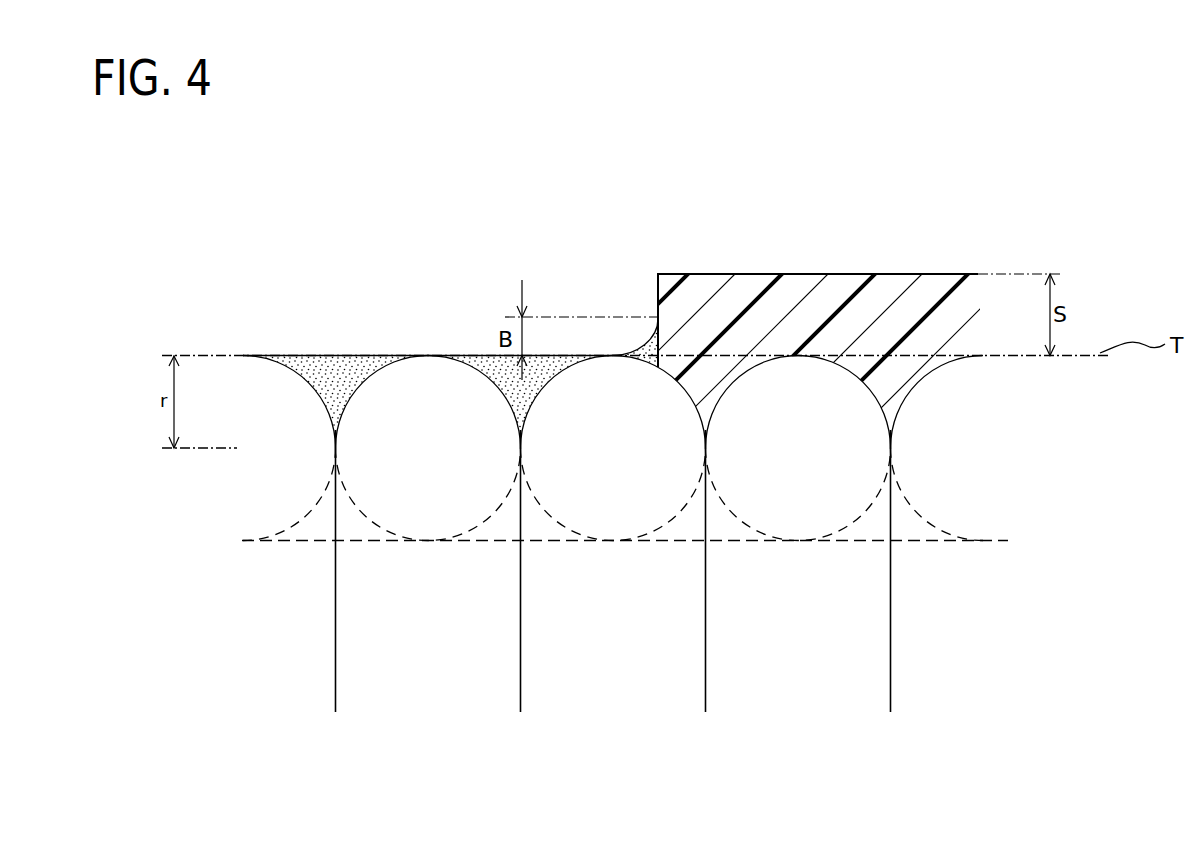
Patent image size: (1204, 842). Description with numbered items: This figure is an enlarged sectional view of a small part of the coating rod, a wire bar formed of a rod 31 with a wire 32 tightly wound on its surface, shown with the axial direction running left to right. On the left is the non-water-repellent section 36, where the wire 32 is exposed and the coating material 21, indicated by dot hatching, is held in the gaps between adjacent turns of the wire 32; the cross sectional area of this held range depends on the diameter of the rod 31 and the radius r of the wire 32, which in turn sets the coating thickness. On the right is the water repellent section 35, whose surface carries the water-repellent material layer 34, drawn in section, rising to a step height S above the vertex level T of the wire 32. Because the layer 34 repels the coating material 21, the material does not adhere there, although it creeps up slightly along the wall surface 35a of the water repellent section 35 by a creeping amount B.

The coating material 21 is at (363, 355).
The rod 31 is at (1012, 542).
The wire 32 is at (857, 418).
The water-repellent material layer 34 is at (795, 327).
The water repellent section 35 is at (1015, 225).
The wall surface 35a is at (656, 299).
The non-water-repellent section 36 is at (655, 237).